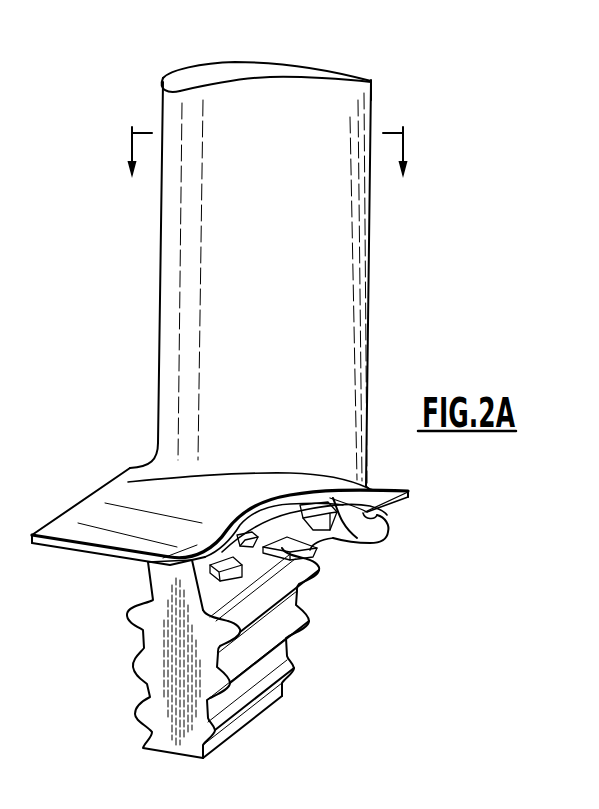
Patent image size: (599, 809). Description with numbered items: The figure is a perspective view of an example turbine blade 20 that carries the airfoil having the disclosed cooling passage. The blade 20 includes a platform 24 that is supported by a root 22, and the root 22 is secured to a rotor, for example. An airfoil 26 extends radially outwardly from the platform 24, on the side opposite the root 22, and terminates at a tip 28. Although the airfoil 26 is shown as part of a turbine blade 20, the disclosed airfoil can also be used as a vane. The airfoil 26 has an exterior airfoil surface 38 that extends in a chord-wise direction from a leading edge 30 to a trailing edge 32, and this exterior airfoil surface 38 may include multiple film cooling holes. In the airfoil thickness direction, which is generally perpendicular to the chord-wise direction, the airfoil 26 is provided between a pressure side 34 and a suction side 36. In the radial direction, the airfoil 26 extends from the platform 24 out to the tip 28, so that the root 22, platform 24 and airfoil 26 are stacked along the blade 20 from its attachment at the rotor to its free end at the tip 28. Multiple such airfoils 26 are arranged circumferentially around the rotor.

The blade 20 is at (113, 223).
The root 22 is at (167, 662).
The platform 24 is at (272, 485).
The airfoil 26 is at (318, 370).
The tip 28 is at (182, 72).
The leading edge 30 is at (160, 234).
The trailing edge 32 is at (369, 225).
The pressure side 34 is at (272, 397).
The suction side 36 is at (297, 55).
The exterior airfoil surface 38 is at (384, 91).